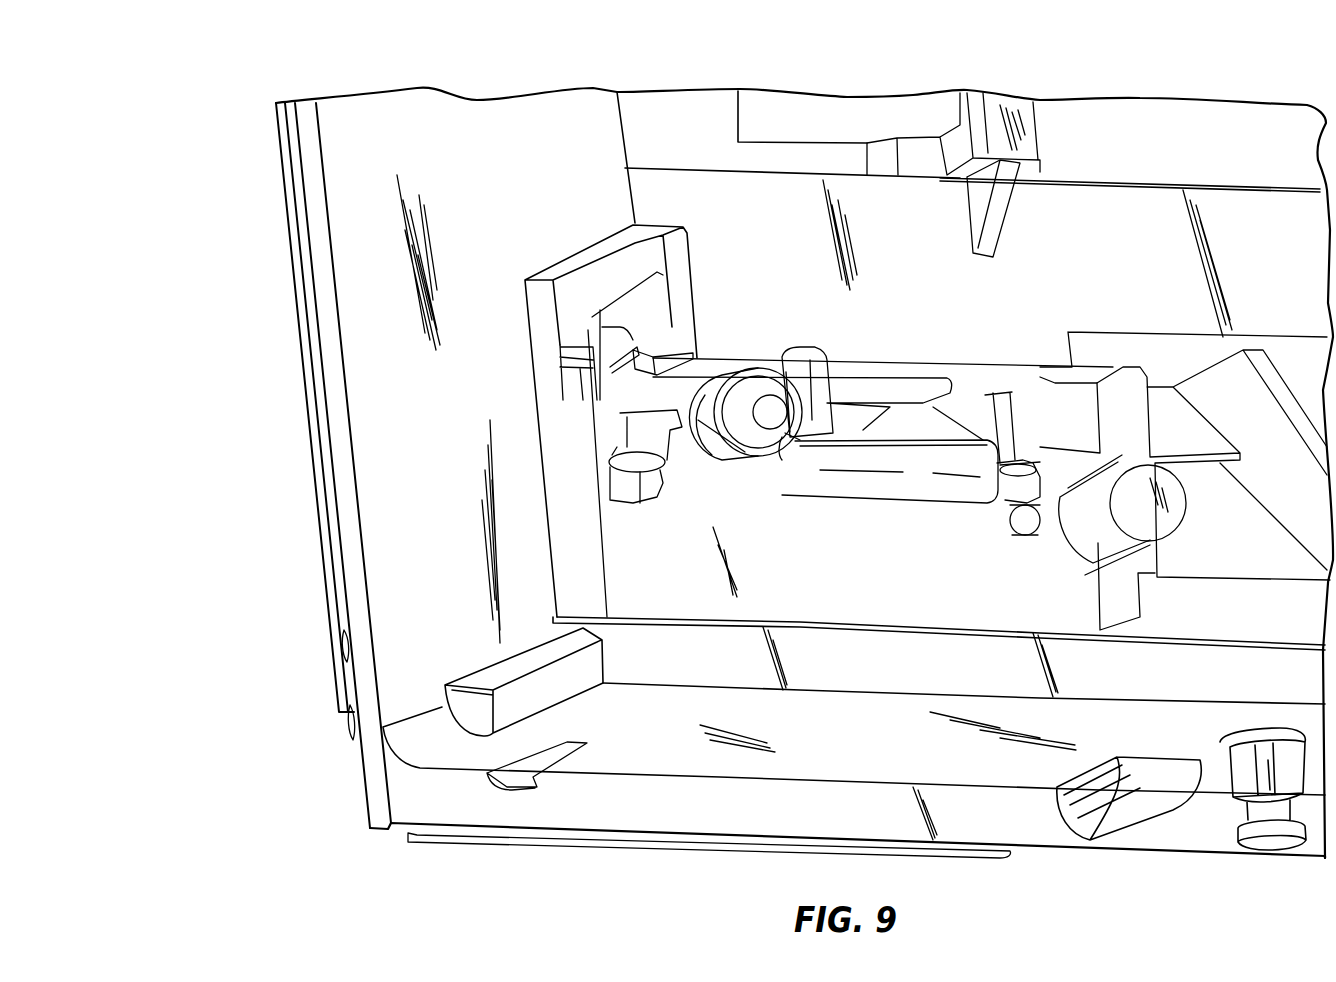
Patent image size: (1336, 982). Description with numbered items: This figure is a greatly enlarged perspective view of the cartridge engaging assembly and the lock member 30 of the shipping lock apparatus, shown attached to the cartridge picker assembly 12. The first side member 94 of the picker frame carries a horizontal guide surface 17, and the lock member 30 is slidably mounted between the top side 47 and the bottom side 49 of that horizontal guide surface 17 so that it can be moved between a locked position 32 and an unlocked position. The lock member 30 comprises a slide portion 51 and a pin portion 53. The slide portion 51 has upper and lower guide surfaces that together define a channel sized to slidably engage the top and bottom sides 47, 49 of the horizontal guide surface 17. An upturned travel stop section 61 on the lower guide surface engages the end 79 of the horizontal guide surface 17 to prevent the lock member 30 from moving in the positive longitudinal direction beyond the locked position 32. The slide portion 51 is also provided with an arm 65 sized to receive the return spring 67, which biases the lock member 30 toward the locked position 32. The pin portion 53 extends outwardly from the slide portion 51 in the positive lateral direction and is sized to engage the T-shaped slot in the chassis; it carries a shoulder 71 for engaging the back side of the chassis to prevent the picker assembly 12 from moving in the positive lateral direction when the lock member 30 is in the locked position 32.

The cartridge picker assembly 12 is at (192, 74).
The first side member 94 is at (305, 406).
The lock member 30 is at (606, 296).
The horizontal guide surface 17 is at (648, 330).
The end of horizontal guide surface 79 is at (690, 328).
The upturned travel stop section 61 is at (667, 348).
The top side of horizontal guide surface 47 is at (613, 330).
The arm 65 is at (617, 505).
The pin portion 53 is at (770, 370).
The locked position 32 is at (815, 352).
The slide portion 51 is at (928, 372).
The bottom side of horizontal guide surface 49 is at (995, 378).
The return spring 67 is at (897, 503).
The shoulder 71 is at (800, 440).